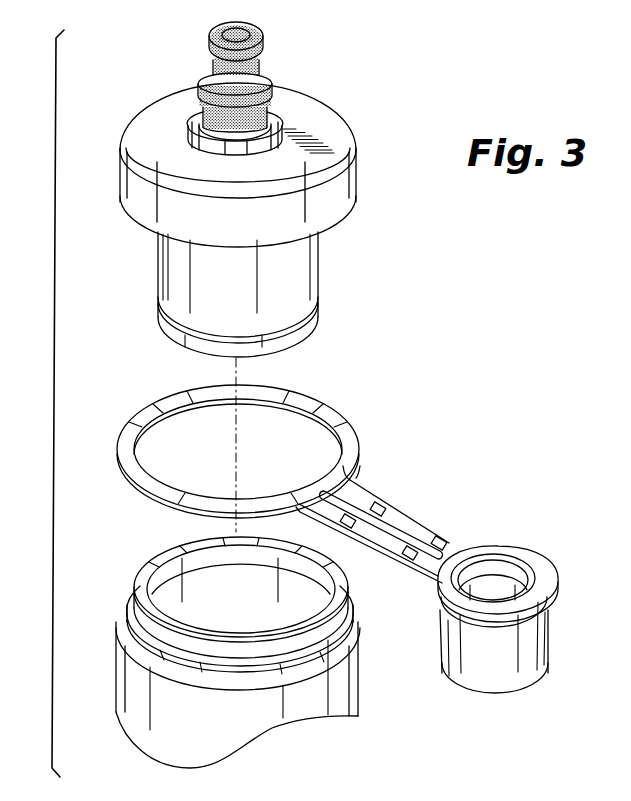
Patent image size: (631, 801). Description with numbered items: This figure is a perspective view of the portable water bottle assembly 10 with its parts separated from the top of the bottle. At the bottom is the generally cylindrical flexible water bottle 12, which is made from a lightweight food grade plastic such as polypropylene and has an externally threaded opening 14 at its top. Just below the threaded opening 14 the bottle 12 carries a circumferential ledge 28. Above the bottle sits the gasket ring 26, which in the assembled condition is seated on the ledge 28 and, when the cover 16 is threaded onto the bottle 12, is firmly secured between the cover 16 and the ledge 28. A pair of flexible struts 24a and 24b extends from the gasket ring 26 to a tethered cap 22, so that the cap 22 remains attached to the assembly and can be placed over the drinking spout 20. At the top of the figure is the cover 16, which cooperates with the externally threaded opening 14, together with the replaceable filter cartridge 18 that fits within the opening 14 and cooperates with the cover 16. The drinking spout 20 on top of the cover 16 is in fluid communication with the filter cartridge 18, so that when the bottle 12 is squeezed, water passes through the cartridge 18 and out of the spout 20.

The water bottle assembly 10 is at (448, 335).
The water bottle 12 is at (130, 682).
The externally threaded opening 14 is at (160, 562).
The cover 16 is at (148, 117).
The replaceable filter cartridge 18 is at (163, 277).
The drinking spout 20 is at (207, 55).
The tethered cap 22 is at (473, 677).
The flexible strut 24a is at (385, 556).
The flexible strut 24b is at (418, 512).
The gasket ring 26 is at (150, 410).
The circumferential ledge 28 is at (130, 612).